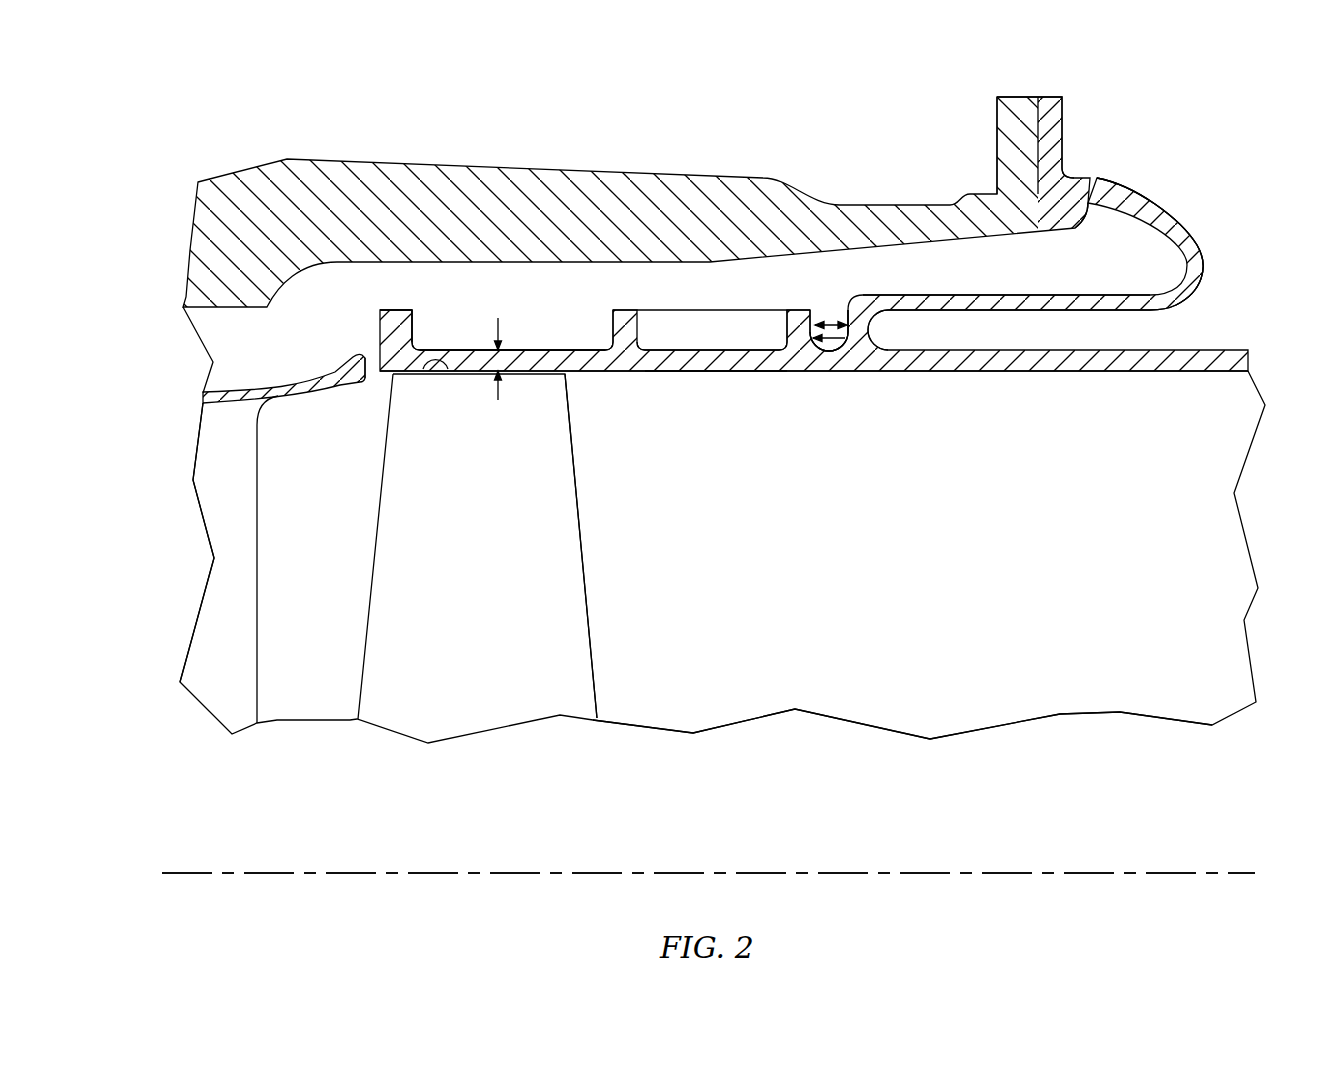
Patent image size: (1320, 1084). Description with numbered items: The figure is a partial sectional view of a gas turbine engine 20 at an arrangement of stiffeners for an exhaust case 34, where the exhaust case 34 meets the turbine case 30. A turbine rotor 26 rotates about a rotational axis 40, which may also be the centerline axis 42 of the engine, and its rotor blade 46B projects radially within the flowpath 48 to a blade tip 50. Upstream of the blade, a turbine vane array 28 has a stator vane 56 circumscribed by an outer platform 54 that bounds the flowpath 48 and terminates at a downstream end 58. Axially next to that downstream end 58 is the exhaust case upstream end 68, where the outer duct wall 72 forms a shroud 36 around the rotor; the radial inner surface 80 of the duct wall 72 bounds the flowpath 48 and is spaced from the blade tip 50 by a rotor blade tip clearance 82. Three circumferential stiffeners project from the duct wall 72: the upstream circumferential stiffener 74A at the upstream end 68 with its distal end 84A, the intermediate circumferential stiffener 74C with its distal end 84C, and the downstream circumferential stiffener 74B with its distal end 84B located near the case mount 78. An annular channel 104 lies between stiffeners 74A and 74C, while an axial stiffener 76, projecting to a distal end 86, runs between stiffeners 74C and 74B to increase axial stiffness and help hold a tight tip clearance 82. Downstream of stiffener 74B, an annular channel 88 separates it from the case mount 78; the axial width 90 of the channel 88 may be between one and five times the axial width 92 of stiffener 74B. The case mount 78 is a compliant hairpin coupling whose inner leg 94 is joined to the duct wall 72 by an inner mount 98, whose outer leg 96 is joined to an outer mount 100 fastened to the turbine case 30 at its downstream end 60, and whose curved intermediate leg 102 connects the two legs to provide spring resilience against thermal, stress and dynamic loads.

The gas turbine engine 20 is at (1213, 108).
The turbine rotor 26 is at (598, 660).
The turbine vane array 28 is at (190, 567).
The turbine case 30 is at (554, 170).
The exhaust case 34 is at (851, 388).
The shroud 36 is at (600, 377).
The rotational axis 40 is at (170, 873).
The centerline axis 42 is at (699, 823).
The rotor blade 46B is at (587, 560).
The flowpath 48 is at (820, 586).
The blade tip 50 is at (425, 370).
The turbine vane array outer platform 54 is at (205, 396).
The turbine vane array stator vane 56 is at (180, 680).
The downstream end of the outer platform 58 is at (376, 380).
The turbine case downstream end 60 is at (1092, 205).
The exhaust case upstream end 68 is at (380, 330).
The outer duct wall 72 is at (933, 385).
The upstream circumferential stiffener 74A is at (415, 313).
The downstream circumferential stiffener 74B is at (848, 310).
The intermediate circumferential stiffener 74C is at (609, 313).
The axial stiffener 76 is at (707, 310).
The case mount 78 is at (1208, 255).
The radial inner surface 80 is at (690, 376).
The rotor blade tip clearance 82 is at (498, 400).
The distal end of the upstream circumferential stiffener 84A is at (397, 310).
The distal end of the downstream circumferential stiffener 84B is at (805, 310).
The distal end of the intermediate circumferential stiffener 84C is at (628, 310).
The distal end of the axial stiffener 86 is at (678, 310).
The annular channel 88 is at (828, 349).
The axial width of the channel 90 is at (863, 294).
The axial width of the downstream circumferential stiffener 92 is at (786, 338).
The inner leg 94 is at (1008, 310).
The outer leg 96 is at (1152, 208).
The inner mount 98 is at (878, 327).
The outer mount 100 is at (1063, 130).
The intermediate leg 102 is at (1205, 272).
The annular channel 104 is at (565, 337).